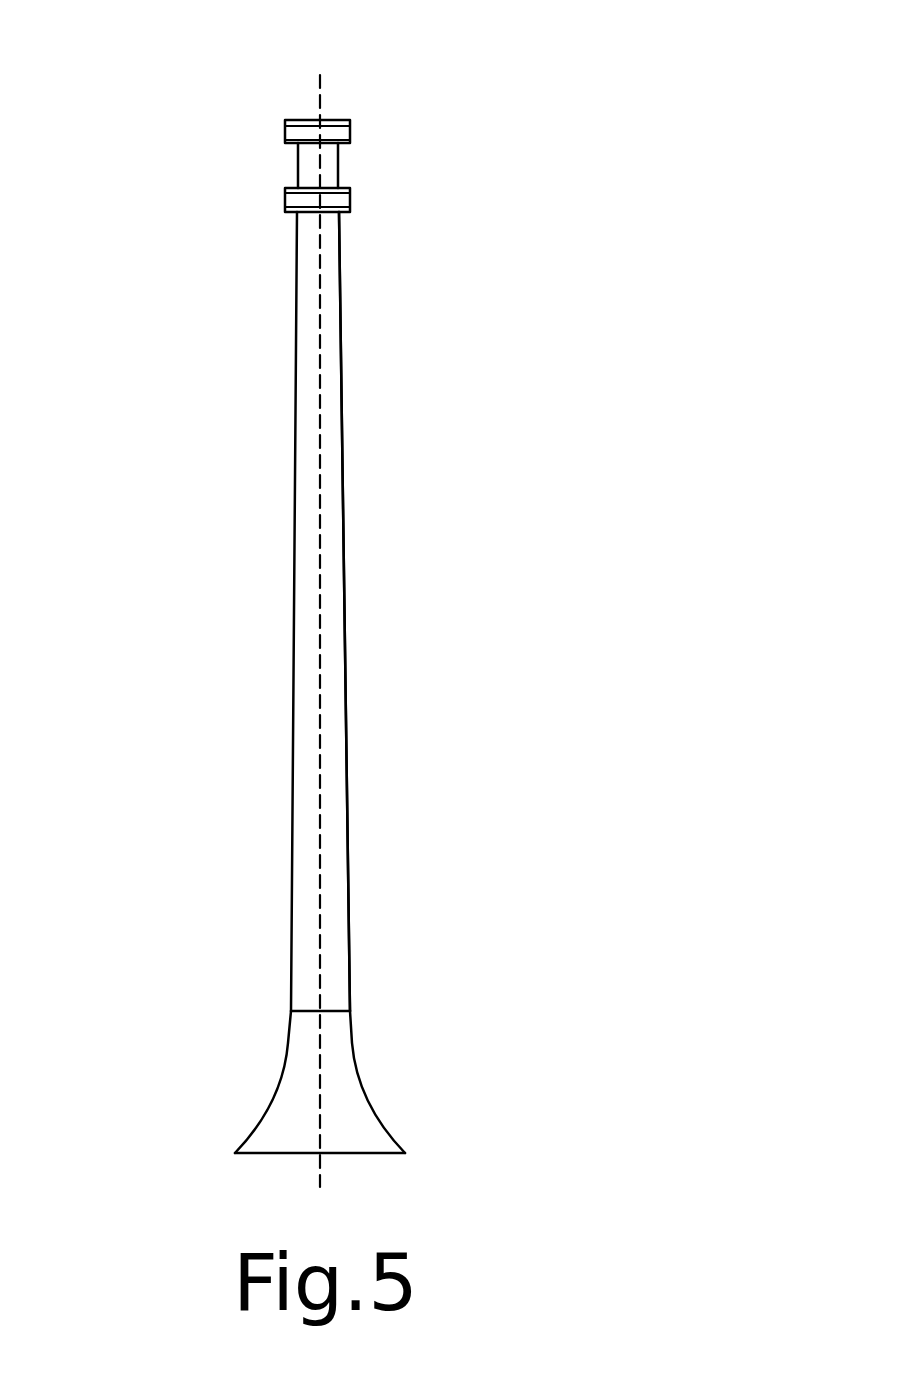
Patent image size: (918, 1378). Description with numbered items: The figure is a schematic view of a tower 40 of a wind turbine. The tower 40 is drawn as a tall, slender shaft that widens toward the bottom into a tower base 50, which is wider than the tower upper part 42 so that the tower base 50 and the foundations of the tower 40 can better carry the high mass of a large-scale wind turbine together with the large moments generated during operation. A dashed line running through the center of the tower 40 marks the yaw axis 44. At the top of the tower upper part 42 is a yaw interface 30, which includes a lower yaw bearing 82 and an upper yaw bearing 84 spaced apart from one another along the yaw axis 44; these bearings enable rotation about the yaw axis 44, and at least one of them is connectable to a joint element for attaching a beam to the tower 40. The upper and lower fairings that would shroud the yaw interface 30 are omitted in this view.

The yaw interface 30 is at (415, 601).
The tower 40 is at (295, 715).
The tower upper part 42 is at (390, 570).
The yaw axis 44 is at (322, 1170).
The tower base 50 is at (338, 1077).
The lower yaw bearing 82 is at (340, 203).
The upper yaw bearing 84 is at (313, 131).